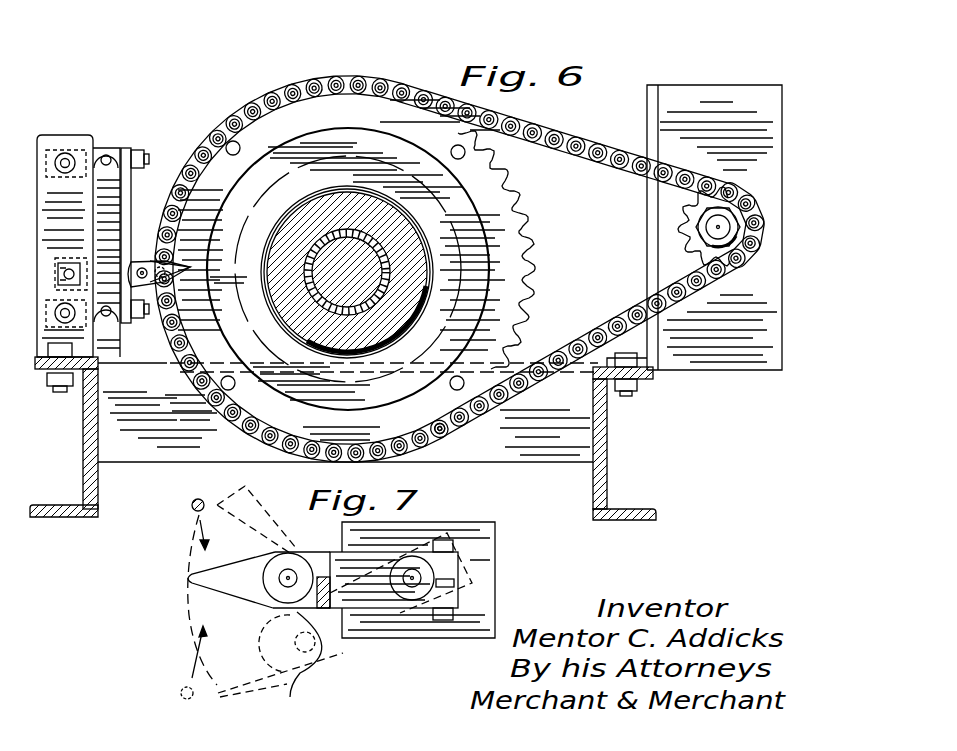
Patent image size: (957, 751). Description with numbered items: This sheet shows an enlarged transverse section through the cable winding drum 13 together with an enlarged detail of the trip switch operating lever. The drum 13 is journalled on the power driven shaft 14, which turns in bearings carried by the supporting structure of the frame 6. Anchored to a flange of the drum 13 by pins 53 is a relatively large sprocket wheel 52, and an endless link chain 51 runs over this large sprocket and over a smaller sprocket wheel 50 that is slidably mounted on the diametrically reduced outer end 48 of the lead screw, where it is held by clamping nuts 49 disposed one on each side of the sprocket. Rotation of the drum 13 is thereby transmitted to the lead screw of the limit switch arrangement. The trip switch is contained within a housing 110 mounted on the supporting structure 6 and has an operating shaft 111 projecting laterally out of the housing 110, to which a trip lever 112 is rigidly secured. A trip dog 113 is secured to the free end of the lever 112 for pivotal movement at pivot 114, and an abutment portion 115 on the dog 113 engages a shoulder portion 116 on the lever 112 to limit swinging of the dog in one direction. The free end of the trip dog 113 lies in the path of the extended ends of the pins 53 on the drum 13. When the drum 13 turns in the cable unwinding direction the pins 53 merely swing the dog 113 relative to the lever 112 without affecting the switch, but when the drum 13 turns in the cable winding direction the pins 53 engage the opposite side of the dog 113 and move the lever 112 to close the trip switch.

In FIG. 6, the frame 6 is at (603, 484).
In FIG. 6, the cable winding drum 13 is at (352, 143).
In FIG. 6, the power driven shaft 14 is at (330, 262).
In FIG. 6, the diametrically reduced outer end 48 is at (717, 227).
In FIG. 6, the clamping nuts 49 is at (706, 236).
In FIG. 6, the sprocket wheel 50 is at (692, 252).
In FIG. 6, the endless link chain 51 is at (584, 152).
In FIG. 6, the sprocket wheel 52 is at (520, 293).
In FIG. 6, the pins 53 is at (228, 141).
In FIG. 7, the pins 53 is at (191, 505).
In FIG. 6, the housing 110 is at (105, 190).
In FIG. 7, the housing 110 is at (482, 554).
In FIG. 7, the operating shaft 111 is at (412, 582).
In FIG. 6, the trip lever 112 is at (140, 262).
In FIG. 7, the trip lever 112 is at (352, 568).
In FIG. 6, the trip dog 113 is at (182, 275).
In FIG. 7, the trip dog 113 is at (236, 492).
In FIG. 6, the pivotal connection 114 is at (153, 290).
In FIG. 7, the pivotal connection 114 is at (288, 576).
In FIG. 7, the abutment portion 115 is at (302, 654).
In FIG. 7, the shoulder portion 116 is at (326, 590).